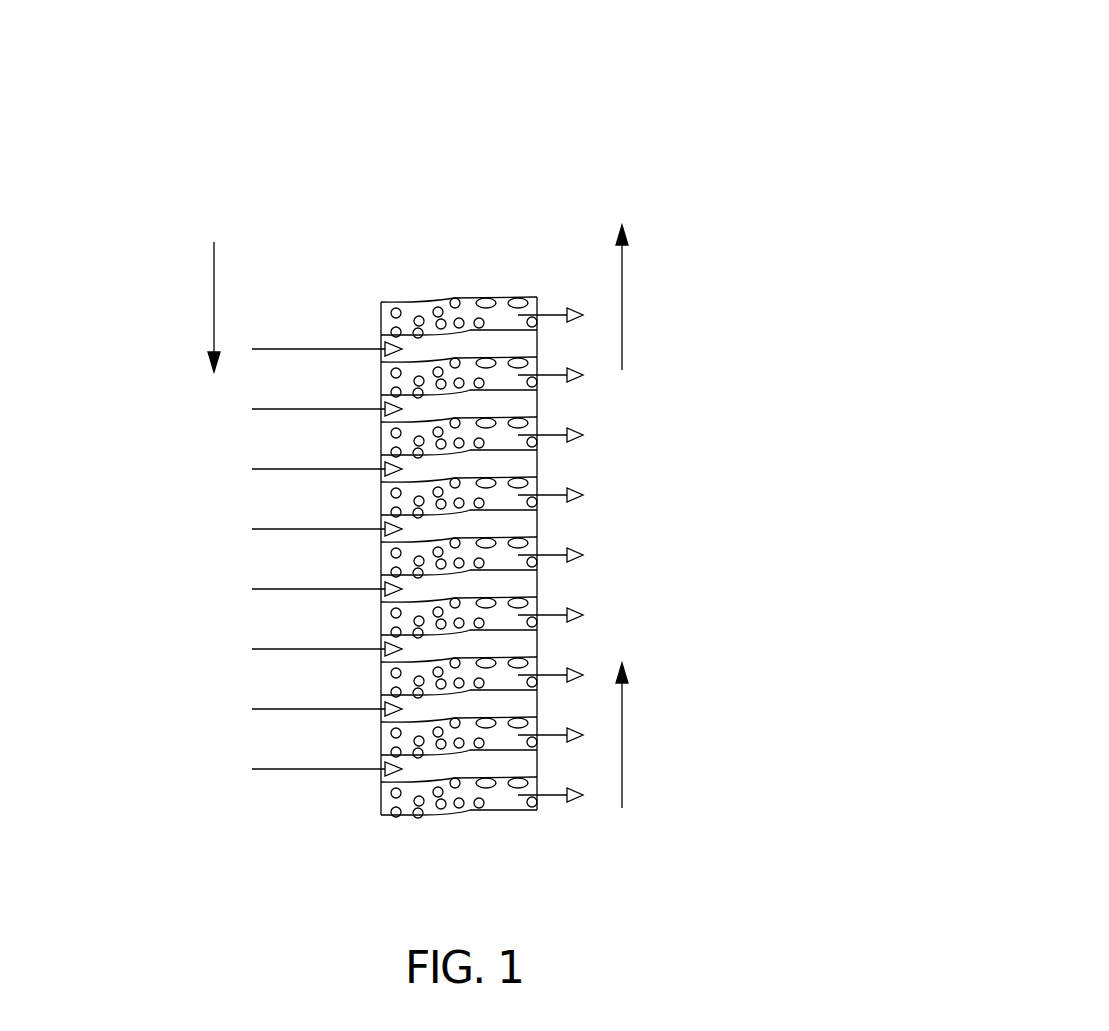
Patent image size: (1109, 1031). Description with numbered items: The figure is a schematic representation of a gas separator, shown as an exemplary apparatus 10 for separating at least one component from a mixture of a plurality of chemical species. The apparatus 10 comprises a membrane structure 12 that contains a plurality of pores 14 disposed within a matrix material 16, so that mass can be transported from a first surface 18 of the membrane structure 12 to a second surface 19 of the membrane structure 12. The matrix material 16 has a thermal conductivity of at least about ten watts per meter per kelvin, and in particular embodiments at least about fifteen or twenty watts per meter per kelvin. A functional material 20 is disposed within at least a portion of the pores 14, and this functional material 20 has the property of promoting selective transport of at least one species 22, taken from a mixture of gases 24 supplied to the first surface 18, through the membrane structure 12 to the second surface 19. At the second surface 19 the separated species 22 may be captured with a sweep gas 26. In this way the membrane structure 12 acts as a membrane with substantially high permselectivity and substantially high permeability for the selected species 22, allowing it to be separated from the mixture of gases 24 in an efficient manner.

The apparatus 10 is at (640, 72).
The membrane structure 12 is at (537, 290).
The pores 14 is at (510, 382).
The matrix material 16 is at (508, 583).
The first surface 18 is at (381, 808).
The second surface 19 is at (537, 527).
The functional material 20 is at (457, 807).
The species 22 is at (552, 680).
The mixture of gases 24 is at (213, 252).
The sweep gas 26 is at (622, 788).